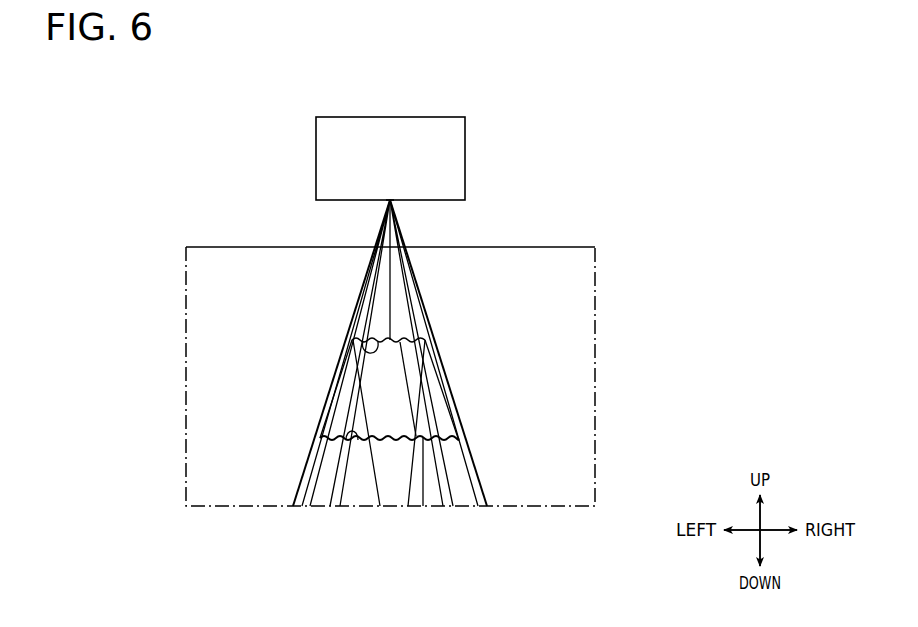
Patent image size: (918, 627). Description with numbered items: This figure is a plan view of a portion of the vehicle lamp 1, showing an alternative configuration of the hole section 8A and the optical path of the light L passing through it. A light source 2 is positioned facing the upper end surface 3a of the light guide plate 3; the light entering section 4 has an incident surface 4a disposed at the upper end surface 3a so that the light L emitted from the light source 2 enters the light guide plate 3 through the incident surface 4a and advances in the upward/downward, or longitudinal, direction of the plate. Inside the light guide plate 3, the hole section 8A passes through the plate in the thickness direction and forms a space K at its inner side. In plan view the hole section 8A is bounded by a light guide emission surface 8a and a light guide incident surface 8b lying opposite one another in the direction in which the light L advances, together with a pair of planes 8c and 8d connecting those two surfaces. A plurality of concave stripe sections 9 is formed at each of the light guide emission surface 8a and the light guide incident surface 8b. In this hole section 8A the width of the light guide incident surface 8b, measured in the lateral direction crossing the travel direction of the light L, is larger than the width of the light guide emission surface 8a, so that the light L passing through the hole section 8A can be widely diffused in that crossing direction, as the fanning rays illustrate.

The vehicle lamp 1 is at (618, 146).
The light source 2 is at (467, 159).
The light guide plate 3 is at (340, 340).
The upper end surface 3a is at (200, 246).
The light entering section 4 is at (450, 220).
The incident surface 4a is at (396, 241).
The hole section 8A is at (389, 323).
The light guide emission surface 8a is at (432, 343).
The light guide incident surface 8b is at (449, 438).
The plane 8c is at (336, 397).
The plane 8d is at (441, 401).
The concave stripe section 9 is at (362, 341).
The space K is at (424, 389).
The light L is at (381, 224).